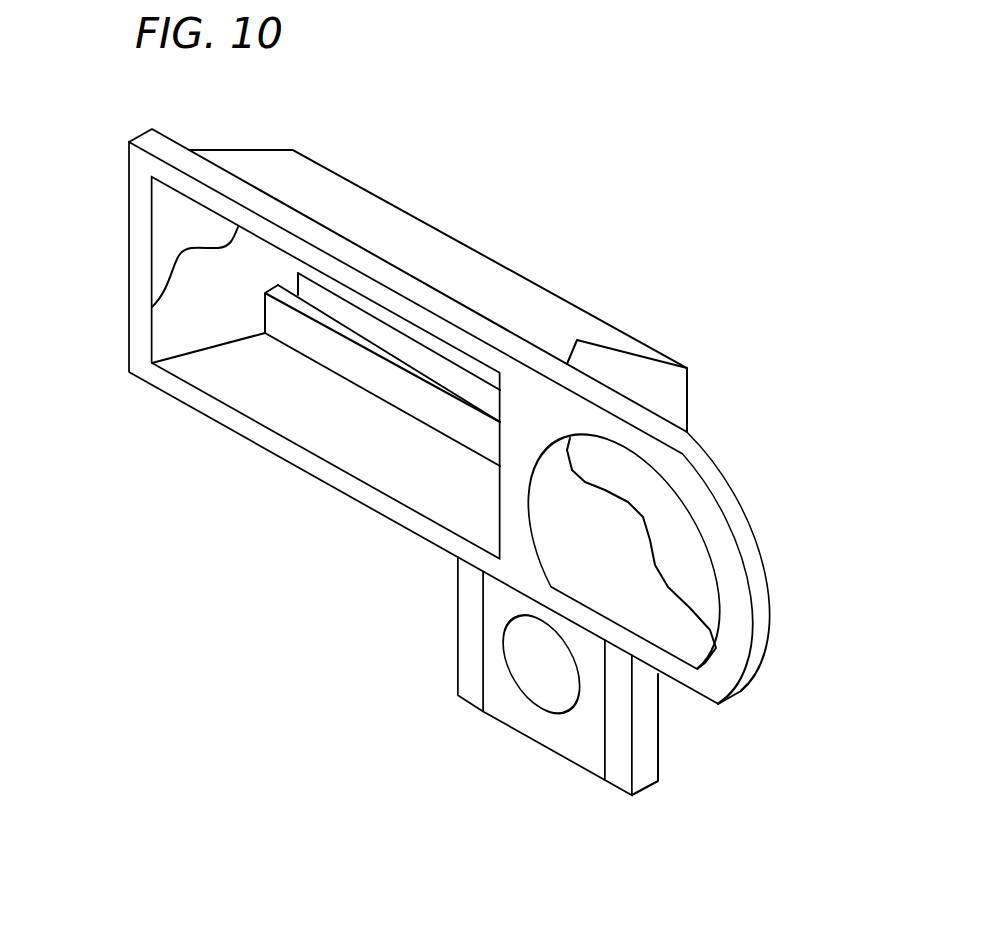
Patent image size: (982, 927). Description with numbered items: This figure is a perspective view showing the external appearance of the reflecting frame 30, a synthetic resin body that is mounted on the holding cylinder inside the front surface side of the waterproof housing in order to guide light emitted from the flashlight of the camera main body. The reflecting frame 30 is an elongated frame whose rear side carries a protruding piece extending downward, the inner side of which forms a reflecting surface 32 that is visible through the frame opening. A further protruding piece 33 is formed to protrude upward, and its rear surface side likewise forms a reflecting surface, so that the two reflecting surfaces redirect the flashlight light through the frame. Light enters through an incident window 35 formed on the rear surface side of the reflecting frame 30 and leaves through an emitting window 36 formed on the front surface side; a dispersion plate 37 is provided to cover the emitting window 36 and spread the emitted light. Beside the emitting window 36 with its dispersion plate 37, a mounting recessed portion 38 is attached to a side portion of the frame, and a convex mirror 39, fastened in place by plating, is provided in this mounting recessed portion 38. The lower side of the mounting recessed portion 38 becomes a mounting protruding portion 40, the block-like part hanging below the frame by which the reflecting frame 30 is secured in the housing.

The reflecting frame 30 is at (438, 253).
The reflecting surface 32 is at (367, 307).
The protruding piece 33 is at (427, 403).
The incident window 35 is at (447, 368).
The emitting window 36 is at (277, 402).
The dispersion plate 37 is at (168, 222).
The mounting recessed portion 38 is at (660, 620).
The convex mirror 39 is at (680, 540).
The mounting protruding portion 40 is at (570, 733).